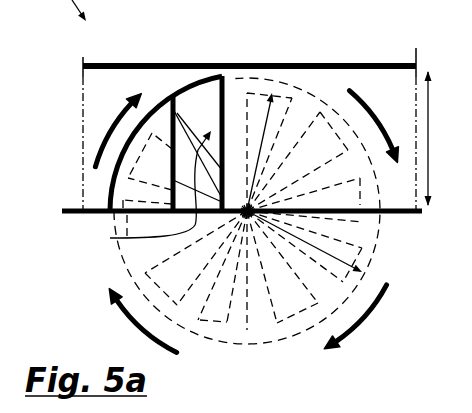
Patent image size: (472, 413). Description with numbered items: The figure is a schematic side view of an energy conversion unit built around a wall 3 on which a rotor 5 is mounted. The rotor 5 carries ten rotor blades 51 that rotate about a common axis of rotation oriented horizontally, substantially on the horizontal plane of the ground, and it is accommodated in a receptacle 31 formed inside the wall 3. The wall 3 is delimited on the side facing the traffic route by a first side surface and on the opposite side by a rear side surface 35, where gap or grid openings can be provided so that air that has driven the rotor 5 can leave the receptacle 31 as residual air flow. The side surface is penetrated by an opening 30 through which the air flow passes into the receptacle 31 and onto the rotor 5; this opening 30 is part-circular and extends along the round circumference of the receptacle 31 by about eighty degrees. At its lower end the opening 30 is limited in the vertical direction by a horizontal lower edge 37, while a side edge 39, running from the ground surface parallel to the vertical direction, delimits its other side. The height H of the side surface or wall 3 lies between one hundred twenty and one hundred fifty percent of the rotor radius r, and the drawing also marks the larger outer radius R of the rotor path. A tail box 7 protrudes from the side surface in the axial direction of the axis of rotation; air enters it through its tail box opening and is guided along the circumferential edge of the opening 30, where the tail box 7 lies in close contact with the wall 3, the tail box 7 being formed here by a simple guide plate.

The wall 3 is at (88, 93).
The tail box 7 is at (113, 172).
The opening 30 is at (203, 106).
The horizontal lower edge 37 is at (185, 224).
The side edge 39 is at (218, 202).
The rotor blades 51 is at (144, 292).
The rotor 5 is at (294, 338).
The rotor radius r is at (266, 123).
The outer radius R is at (323, 252).
The height H is at (429, 153).
The receptacle 31 is at (381, 412).
The rear side surface 35 is at (214, 408).